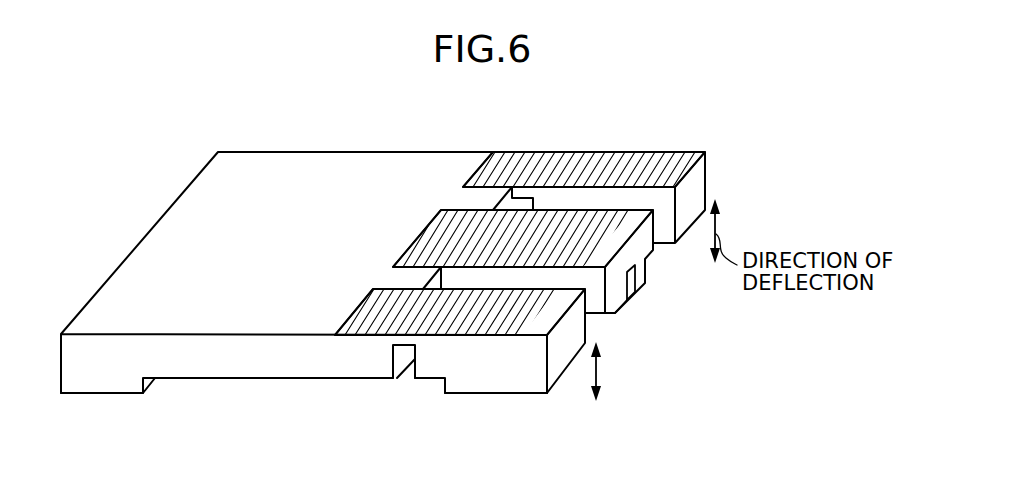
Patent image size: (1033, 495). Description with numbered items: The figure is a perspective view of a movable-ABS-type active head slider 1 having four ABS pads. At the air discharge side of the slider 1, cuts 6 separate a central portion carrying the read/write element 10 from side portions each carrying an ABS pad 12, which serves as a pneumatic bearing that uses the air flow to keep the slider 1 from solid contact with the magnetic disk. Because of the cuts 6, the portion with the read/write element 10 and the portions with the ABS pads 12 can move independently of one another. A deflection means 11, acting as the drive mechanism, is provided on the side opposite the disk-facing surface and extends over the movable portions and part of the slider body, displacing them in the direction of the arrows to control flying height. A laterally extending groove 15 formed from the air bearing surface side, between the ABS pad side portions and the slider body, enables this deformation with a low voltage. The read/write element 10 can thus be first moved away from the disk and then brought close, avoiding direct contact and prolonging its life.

The slider 1 is at (262, 151).
The cuts 6 is at (660, 240).
The read/write element 10 is at (636, 292).
The deflection means 11 is at (488, 164).
The ABS pad 12 is at (100, 394).
The groove 15 is at (399, 362).